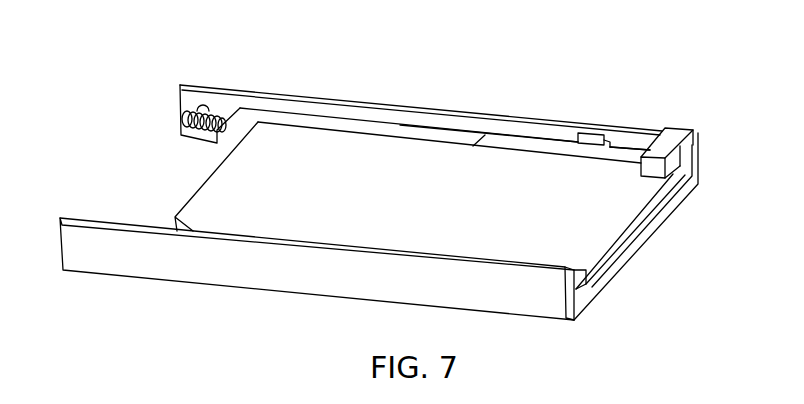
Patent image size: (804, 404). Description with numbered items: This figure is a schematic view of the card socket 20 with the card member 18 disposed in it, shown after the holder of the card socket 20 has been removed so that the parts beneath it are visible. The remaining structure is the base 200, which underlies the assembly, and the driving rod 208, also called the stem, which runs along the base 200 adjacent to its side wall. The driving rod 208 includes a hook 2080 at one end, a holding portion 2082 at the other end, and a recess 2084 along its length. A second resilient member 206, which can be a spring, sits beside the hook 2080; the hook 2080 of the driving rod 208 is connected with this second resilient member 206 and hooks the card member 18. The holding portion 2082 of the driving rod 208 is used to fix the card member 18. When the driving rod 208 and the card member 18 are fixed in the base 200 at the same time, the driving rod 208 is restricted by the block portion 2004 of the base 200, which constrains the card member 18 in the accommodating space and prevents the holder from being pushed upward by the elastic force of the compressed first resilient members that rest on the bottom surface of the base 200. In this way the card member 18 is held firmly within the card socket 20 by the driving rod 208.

The card member 18 is at (600, 212).
The card socket 20 is at (417, 93).
The base 200 is at (303, 96).
The second resilient member 206 is at (181, 118).
The driving rod 208 is at (554, 126).
The block portion 2004 is at (593, 133).
The hook 2080 is at (216, 149).
The holding portion 2082 is at (670, 158).
The recess 2084 is at (627, 151).